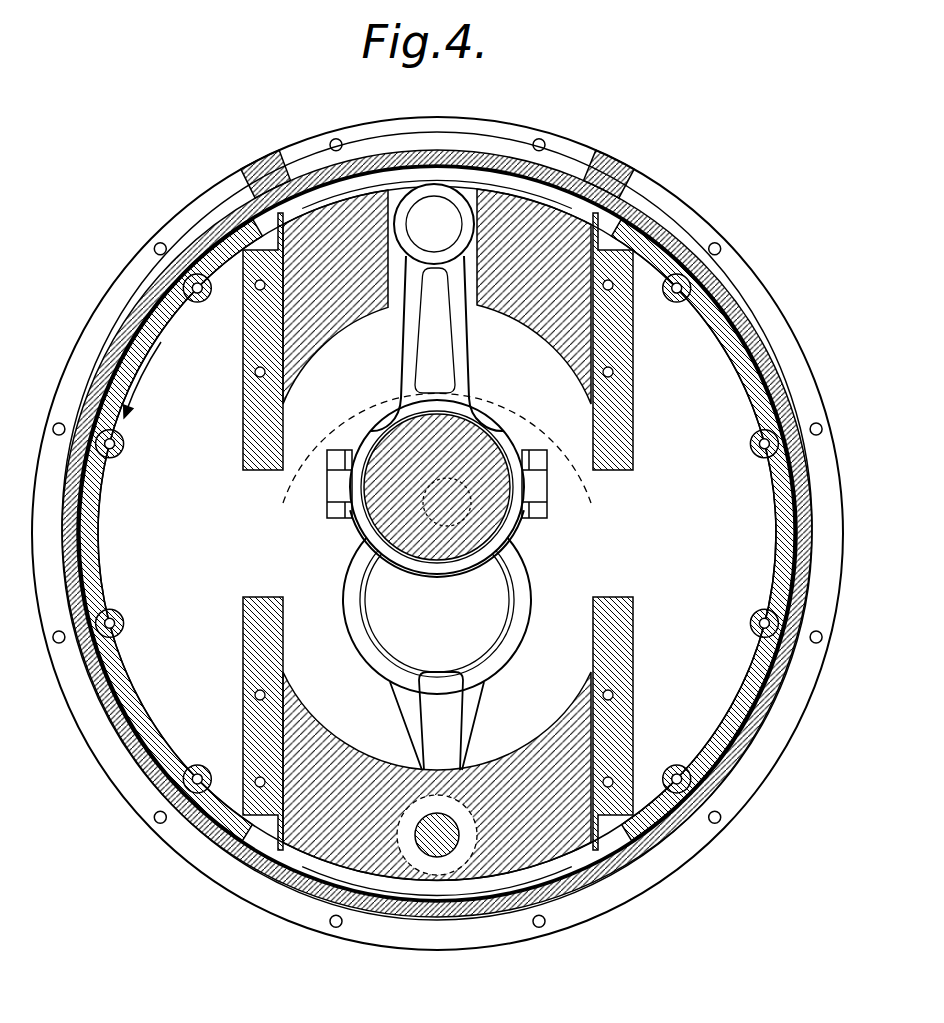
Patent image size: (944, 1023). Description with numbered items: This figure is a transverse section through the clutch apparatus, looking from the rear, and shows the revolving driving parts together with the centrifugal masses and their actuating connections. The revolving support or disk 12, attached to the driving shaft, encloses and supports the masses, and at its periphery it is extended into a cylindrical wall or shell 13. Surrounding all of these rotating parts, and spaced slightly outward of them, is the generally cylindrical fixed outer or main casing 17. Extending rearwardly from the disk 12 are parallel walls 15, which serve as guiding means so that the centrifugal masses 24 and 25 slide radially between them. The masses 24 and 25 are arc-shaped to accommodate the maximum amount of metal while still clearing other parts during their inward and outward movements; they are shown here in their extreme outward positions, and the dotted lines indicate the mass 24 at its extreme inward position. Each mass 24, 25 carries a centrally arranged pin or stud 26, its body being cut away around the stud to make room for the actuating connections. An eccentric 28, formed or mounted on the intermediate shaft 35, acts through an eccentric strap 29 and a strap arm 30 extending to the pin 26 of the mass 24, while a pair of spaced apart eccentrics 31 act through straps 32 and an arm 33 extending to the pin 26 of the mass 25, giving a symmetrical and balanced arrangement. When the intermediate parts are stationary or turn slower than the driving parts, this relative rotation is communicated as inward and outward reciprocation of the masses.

The revolving support or disk 12 is at (437, 533).
The cylindrical wall or shell 13 is at (757, 358).
The parallel walls 15 is at (630, 401).
The fixed outer or main casing 17 is at (548, 160).
The centrifugal mass 24 is at (327, 303).
The centrifugal mass 25 is at (320, 750).
The pin or stud 26 is at (436, 214).
The eccentric 28 is at (473, 452).
The eccentric strap 29 is at (381, 424).
The strap arm 30 is at (455, 333).
The spaced apart eccentrics 31 is at (400, 603).
The straps 32 is at (508, 611).
The arm 33 is at (447, 705).
The intermediate shaft 35 is at (497, 532).